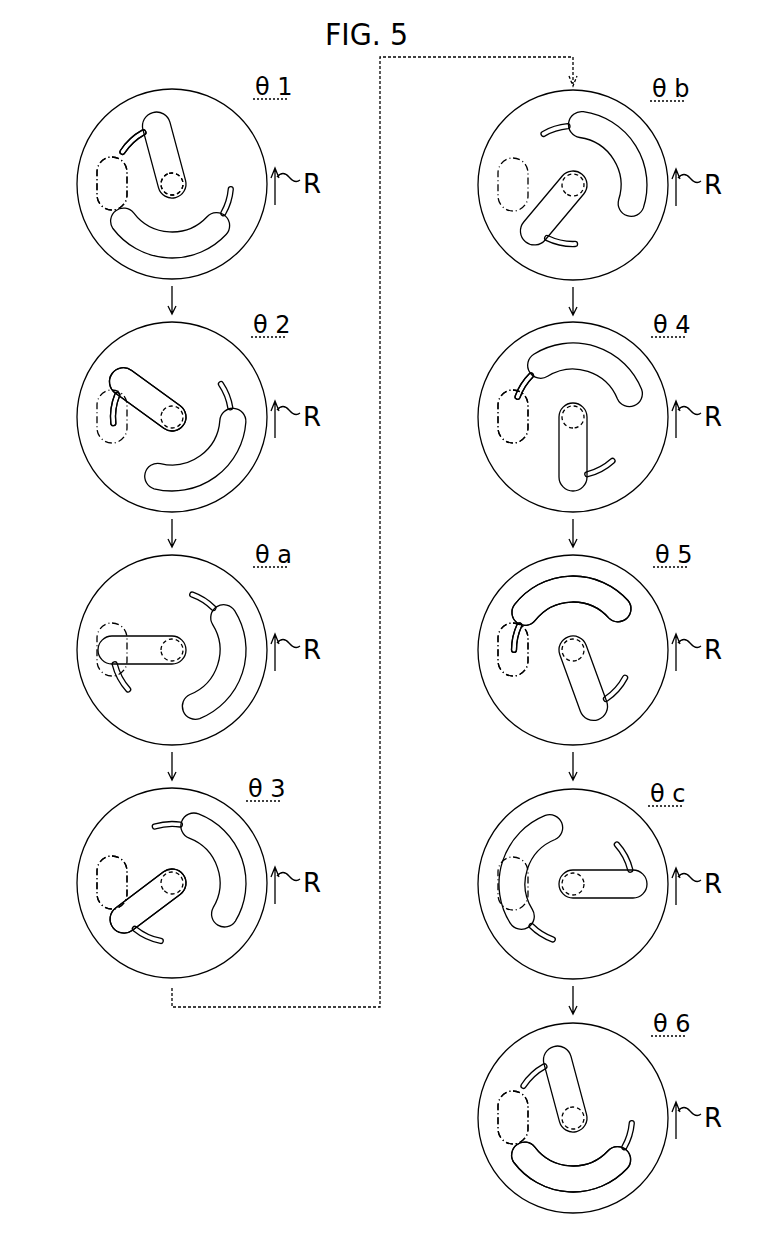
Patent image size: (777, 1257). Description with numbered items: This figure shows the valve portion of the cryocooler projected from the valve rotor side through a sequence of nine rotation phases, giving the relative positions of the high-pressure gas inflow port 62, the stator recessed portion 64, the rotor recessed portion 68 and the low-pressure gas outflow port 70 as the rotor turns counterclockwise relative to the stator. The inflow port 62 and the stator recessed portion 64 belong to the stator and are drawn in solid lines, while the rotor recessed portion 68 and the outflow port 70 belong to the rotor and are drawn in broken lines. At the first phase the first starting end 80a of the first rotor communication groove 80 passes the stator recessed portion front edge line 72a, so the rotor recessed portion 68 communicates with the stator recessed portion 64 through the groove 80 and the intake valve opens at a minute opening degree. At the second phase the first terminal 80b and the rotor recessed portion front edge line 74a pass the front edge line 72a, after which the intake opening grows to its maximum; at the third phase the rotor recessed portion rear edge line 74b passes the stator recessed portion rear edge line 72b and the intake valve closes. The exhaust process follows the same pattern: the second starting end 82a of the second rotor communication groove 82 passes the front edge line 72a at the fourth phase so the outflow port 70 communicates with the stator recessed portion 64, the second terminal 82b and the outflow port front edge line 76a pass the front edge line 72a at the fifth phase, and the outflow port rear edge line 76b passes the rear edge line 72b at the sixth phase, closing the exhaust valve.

The high-pressure gas inflow port 62 is at (171, 180).
The stator recessed portion 64 is at (110, 185).
The rotor recessed portion 68 is at (155, 125).
The low-pressure gas outflow port 70 is at (207, 240).
The stator recessed portion front edge line 72a is at (117, 162).
The stator recessed portion rear edge line 72b is at (120, 902).
The rotor recessed portion front edge line 74a is at (110, 378).
The rotor recessed portion rear edge line 74b is at (127, 883).
The outflow port front edge line 76a is at (517, 600).
The outflow port rear edge line 76b is at (520, 1167).
The first rotor communication groove 80 is at (125, 138).
The first starting end 80a is at (110, 155).
The first terminal 80b is at (107, 395).
The second rotor communication groove 82 is at (233, 203).
The second starting end 82a is at (513, 407).
The second terminal 82b is at (513, 627).